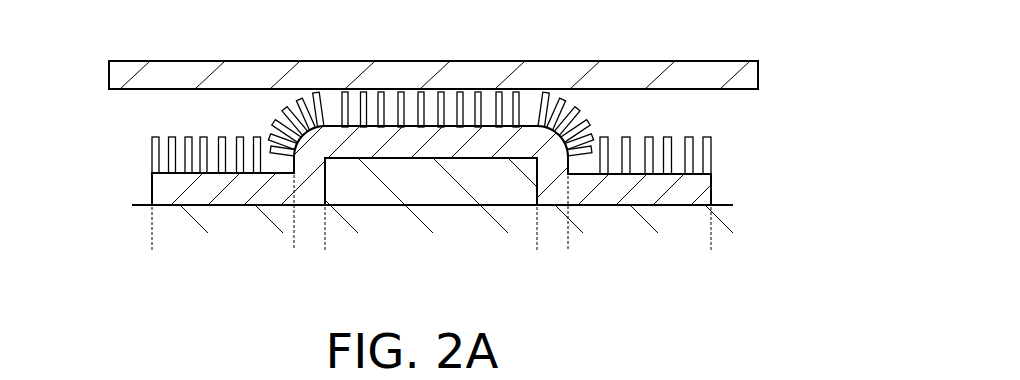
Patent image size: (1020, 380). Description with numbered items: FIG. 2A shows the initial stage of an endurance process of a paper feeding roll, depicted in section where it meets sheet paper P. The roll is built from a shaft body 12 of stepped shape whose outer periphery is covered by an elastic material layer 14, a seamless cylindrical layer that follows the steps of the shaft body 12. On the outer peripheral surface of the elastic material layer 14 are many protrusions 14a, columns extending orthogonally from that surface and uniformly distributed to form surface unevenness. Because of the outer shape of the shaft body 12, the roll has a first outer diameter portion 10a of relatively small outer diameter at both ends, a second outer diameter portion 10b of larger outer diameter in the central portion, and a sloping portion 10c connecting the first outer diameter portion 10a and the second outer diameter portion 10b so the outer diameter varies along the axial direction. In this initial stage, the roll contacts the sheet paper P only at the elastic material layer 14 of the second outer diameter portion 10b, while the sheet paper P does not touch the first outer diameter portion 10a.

The sheet paper P is at (692, 68).
The shaft body 12 is at (166, 228).
The elastic material layer 14 is at (166, 190).
The protrusions 14a is at (204, 153).
The first outer diameter portion 10a is at (152, 245).
The second outer diameter portion 10b is at (325, 245).
The sloping portion 10c is at (294, 245).